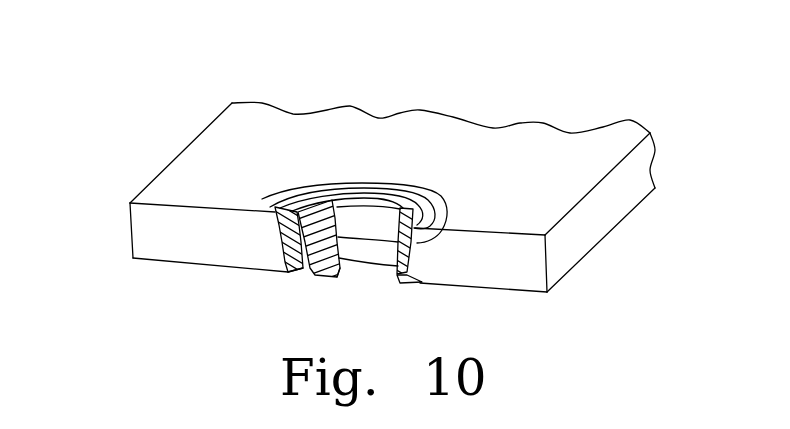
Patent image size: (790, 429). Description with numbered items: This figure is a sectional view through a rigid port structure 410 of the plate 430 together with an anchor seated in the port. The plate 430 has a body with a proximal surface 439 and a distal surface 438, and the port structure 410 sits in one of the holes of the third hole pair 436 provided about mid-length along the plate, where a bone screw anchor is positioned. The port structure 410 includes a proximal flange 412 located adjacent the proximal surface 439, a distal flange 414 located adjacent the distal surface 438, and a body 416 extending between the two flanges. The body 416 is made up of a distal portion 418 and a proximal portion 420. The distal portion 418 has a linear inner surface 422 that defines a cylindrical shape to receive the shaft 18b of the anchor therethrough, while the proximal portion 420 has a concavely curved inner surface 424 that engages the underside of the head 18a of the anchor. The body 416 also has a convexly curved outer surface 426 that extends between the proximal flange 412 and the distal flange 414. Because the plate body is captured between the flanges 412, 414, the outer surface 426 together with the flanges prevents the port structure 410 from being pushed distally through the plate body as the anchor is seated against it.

The plate 430 is at (355, 195).
The proximal surface 439 is at (251, 129).
The distal surface 438 is at (172, 263).
The distal flange 414 is at (423, 283).
The body 416 is at (433, 238).
The port structure 410 is at (357, 243).
The concavely curved inner surface 424 is at (423, 210).
The proximal portion 420 is at (438, 198).
The proximal flange 412 is at (268, 190).
The head 18a is at (320, 205).
The shaft 18b is at (312, 276).
The third hole pair 436 is at (337, 279).
The convexly curved outer surface 426 is at (412, 252).
The linear inner surface 422 is at (397, 275).
The distal portion 418 is at (397, 281).